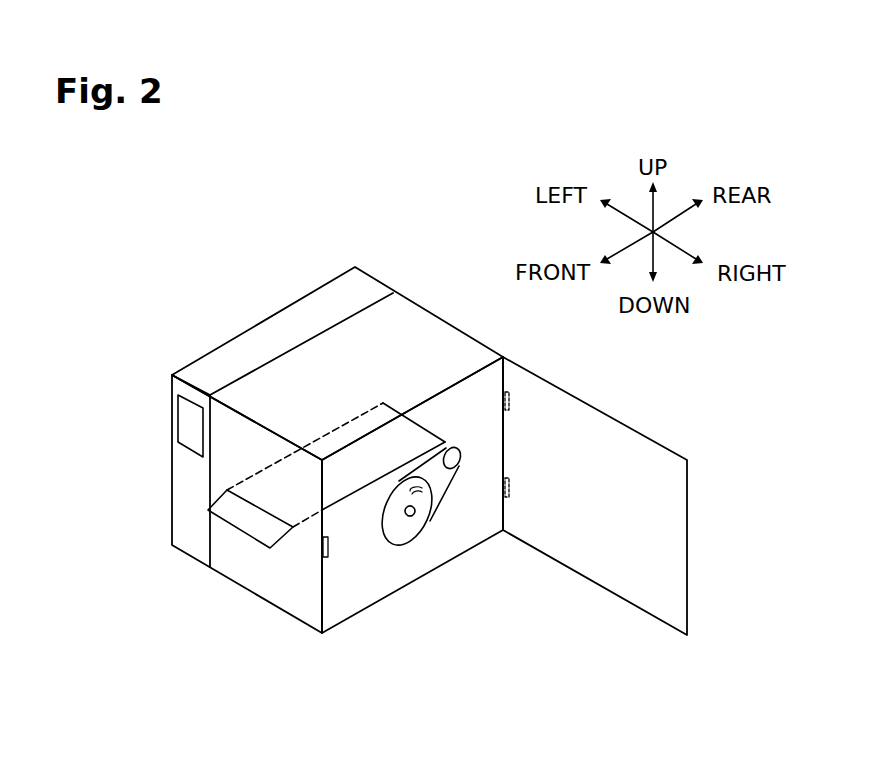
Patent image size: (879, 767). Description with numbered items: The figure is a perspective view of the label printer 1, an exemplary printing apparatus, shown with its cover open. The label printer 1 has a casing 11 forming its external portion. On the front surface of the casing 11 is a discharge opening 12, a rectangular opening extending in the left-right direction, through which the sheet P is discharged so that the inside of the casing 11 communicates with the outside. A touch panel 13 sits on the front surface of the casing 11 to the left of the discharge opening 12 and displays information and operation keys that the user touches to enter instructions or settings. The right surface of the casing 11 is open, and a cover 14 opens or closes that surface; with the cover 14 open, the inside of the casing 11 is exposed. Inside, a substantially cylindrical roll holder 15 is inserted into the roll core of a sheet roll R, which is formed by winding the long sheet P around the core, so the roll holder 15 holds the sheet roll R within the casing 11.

The label printer 1 is at (288, 650).
The casing 11 is at (252, 580).
The discharge opening 12 is at (258, 506).
The touch panel 13 is at (188, 422).
The cover 14 is at (582, 558).
The roll holder 15 is at (413, 514).
The sheet P is at (218, 516).
The sheet roll R is at (385, 528).